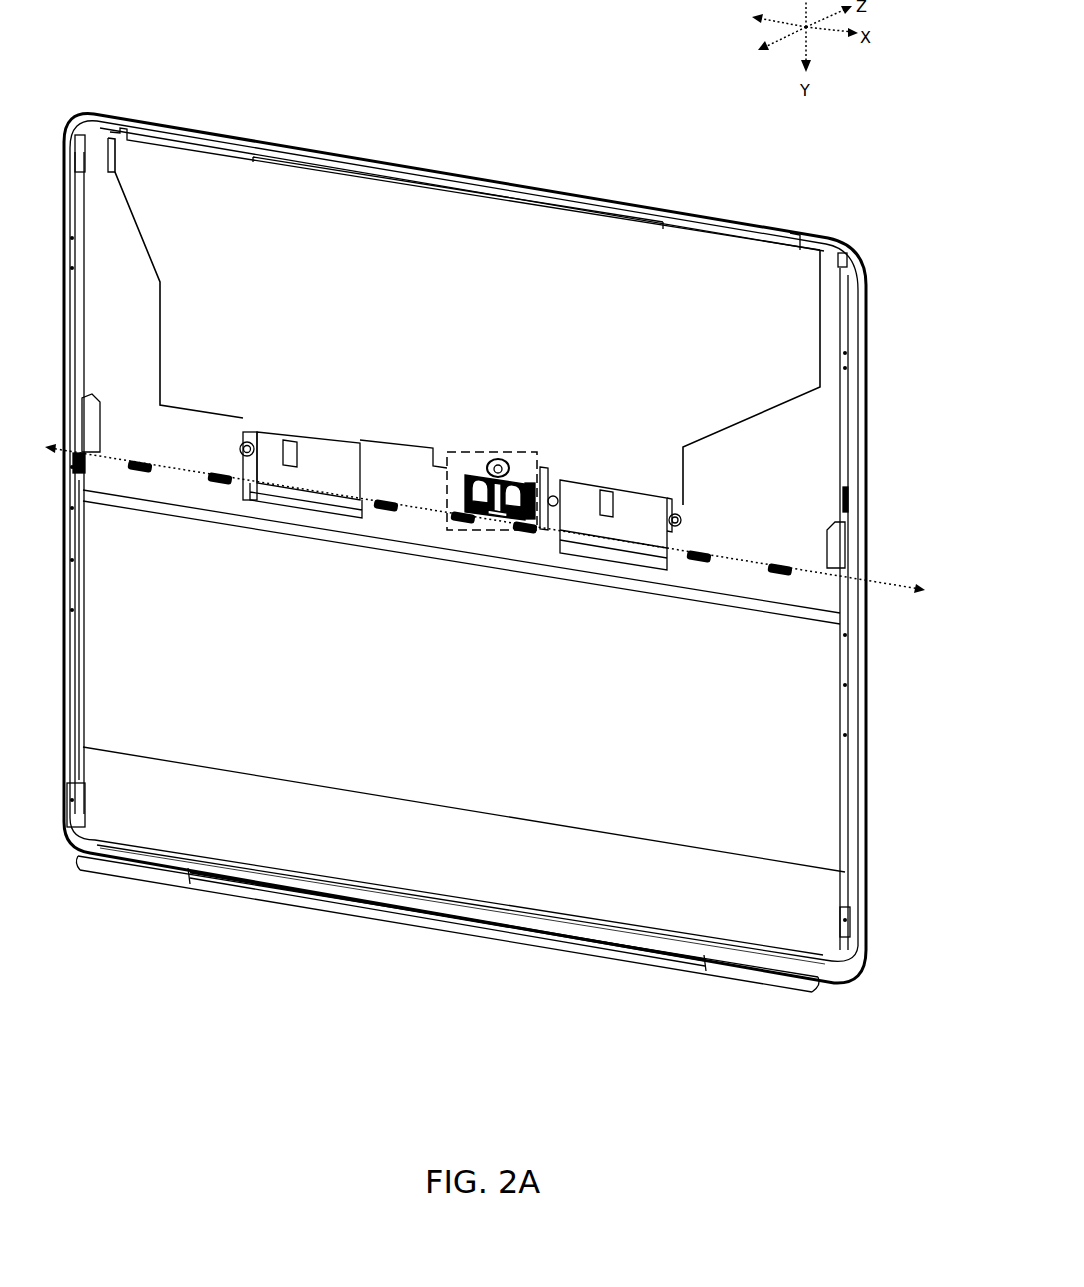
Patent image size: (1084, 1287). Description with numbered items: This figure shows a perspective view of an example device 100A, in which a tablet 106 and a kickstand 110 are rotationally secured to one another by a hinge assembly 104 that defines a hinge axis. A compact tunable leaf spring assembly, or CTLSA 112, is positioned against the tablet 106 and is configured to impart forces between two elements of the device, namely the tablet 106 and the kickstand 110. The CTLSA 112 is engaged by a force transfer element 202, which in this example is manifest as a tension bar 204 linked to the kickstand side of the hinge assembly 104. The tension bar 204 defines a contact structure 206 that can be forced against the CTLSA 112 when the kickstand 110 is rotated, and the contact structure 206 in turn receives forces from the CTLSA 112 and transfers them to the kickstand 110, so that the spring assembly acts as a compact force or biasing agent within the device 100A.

The device 100A is at (552, 110).
The tablet 106 is at (62, 122).
The kickstand 110 is at (858, 247).
The hinge assembly 104 is at (872, 546).
The force transfer element 202 is at (252, 425).
The tension bar 204 is at (358, 445).
The contact structure 206 is at (442, 578).
The compact tunable leaf spring assembly (CTLSA) 112 is at (519, 470).